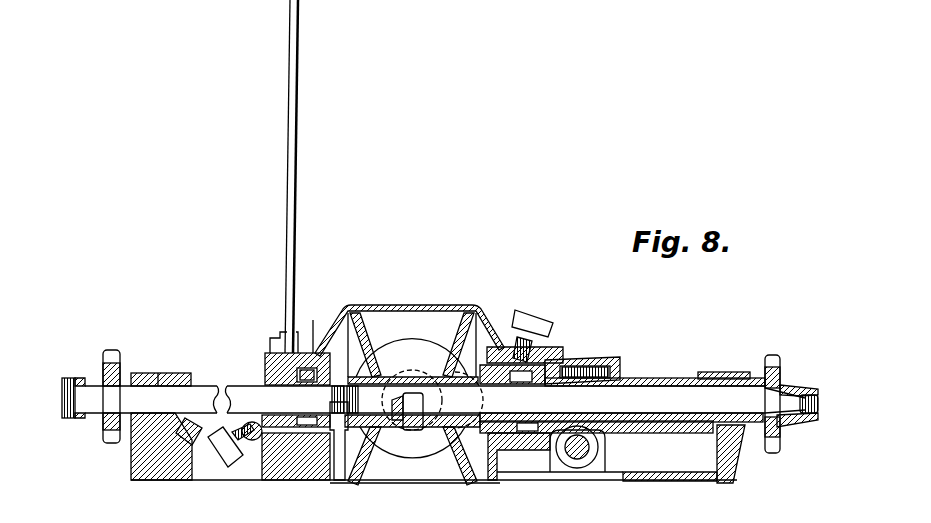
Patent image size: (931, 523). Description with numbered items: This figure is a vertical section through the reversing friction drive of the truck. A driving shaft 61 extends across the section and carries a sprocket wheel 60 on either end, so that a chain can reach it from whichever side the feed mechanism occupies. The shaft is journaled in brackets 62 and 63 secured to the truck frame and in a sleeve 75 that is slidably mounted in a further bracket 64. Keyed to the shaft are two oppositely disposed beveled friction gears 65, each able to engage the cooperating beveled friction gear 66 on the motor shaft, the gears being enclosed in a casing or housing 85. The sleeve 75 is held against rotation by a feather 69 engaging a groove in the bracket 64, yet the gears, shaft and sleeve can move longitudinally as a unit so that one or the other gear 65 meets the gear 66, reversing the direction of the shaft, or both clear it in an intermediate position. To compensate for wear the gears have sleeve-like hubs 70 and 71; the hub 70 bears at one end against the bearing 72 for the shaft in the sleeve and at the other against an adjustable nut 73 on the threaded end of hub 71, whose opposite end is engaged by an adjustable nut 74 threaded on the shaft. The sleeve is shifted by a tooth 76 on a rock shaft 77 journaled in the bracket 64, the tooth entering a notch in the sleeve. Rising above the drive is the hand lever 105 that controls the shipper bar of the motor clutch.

The sprocket wheel 60 is at (117, 351).
The driving shaft 61 is at (710, 403).
The bracket 62 is at (155, 450).
The bracket 63 is at (292, 467).
The bracket 64 is at (683, 472).
The beveled friction gear 65 is at (413, 473).
The beveled friction gear 66 is at (410, 340).
The feather 69 is at (562, 362).
The sleeve-like hub 70 is at (453, 347).
The sleeve-like hub 71 is at (357, 317).
The bearing 72 is at (558, 332).
The adjustable nut 73 is at (440, 347).
The adjustable nut 74 is at (337, 480).
The sleeve 75 is at (653, 379).
The tooth 76 is at (604, 434).
The rock shaft 77 is at (583, 462).
The casing or housing 85 is at (337, 329).
The hand lever 105 is at (289, 95).